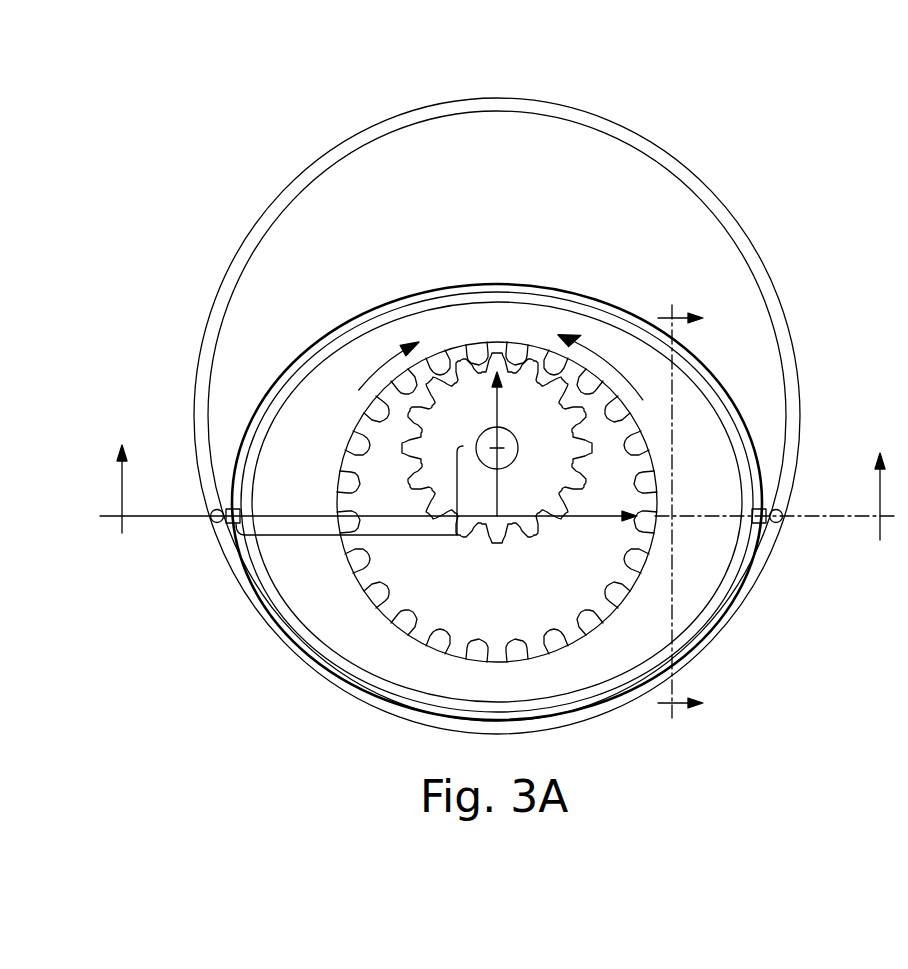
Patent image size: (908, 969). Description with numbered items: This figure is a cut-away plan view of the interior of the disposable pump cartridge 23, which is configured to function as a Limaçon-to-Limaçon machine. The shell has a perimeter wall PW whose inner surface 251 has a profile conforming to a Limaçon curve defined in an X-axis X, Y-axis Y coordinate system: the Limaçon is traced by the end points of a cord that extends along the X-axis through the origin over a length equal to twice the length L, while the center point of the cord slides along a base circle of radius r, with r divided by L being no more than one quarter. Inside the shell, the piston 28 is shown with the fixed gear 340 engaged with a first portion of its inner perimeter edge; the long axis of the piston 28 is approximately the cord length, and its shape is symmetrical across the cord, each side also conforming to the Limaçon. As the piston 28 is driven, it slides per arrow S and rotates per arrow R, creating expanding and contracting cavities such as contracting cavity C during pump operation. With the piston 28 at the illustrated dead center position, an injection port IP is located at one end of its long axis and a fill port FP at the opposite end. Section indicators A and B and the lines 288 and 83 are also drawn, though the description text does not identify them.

The disposable pump cartridge 23 is at (192, 183).
The inner surface 251 is at (718, 228).
The perimeter wall PW is at (772, 297).
The chain/belt path 288 is at (256, 424).
The guide track 83 is at (238, 458).
The piston 28 is at (319, 447).
The fixed gear 340 is at (572, 449).
The injection port IP is at (214, 525).
The fill port FP is at (778, 522).
The contracting cavity C is at (511, 194).
The arrow S is at (374, 375).
The arrow R is at (655, 389).
The length L is at (346, 544).
The radius r is at (453, 490).
The X-axis X is at (497, 528).
The Y-axis Y is at (489, 444).
The section A- A is at (131, 560).
The section B- B is at (725, 330).